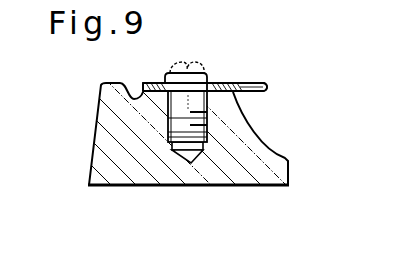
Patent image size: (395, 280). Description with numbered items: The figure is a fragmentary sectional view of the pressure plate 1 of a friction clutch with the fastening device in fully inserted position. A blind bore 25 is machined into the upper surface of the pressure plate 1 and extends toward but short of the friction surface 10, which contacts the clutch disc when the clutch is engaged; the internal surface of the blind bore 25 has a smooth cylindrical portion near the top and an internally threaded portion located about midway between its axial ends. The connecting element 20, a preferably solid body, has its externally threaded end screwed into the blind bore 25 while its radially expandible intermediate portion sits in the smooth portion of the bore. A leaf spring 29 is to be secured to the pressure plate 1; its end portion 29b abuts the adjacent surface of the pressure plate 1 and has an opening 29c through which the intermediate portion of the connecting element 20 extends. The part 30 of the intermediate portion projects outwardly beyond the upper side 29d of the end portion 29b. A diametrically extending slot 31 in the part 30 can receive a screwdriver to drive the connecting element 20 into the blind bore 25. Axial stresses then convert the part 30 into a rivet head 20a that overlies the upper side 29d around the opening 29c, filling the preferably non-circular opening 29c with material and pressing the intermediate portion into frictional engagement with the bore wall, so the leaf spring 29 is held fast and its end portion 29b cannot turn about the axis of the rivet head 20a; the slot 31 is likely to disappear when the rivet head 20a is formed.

The pressure plate 1 is at (106, 154).
The friction surface 10 is at (160, 187).
The connecting element 20 is at (219, 106).
The rivet head 20a is at (213, 80).
The blind bore 25 is at (193, 160).
The leaf spring 29 is at (189, 76).
The end portion of the leaf spring 29b is at (147, 82).
The opening 29c is at (167, 92).
The upper side of the end portion 29d is at (253, 80).
The part of the intermediate portion 30 is at (207, 73).
The slot 31 is at (188, 65).